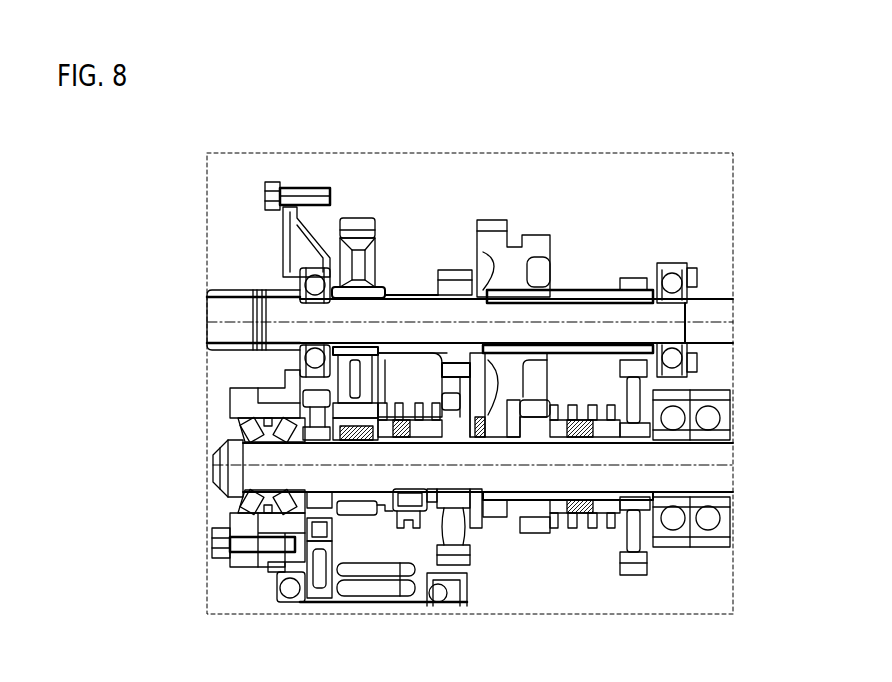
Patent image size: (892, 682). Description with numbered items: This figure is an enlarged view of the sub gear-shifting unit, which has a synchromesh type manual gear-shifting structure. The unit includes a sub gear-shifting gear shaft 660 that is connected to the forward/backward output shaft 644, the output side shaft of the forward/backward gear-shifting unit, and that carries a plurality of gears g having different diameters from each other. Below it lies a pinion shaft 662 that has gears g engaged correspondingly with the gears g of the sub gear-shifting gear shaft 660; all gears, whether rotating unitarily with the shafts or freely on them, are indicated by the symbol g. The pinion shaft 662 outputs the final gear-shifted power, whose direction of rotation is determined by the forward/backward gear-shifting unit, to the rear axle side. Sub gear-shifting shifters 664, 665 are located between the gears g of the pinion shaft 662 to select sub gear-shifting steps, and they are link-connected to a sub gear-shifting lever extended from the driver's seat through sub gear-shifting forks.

The forward/backward output shaft 644 is at (228, 318).
The sub gear-shifting gear shaft 660 is at (700, 307).
The pinion shaft 662 is at (718, 455).
The sub gear-shifting shifter 664 is at (410, 528).
The sub gear-shifting shifter 665 is at (577, 530).
The gear g is at (455, 270).